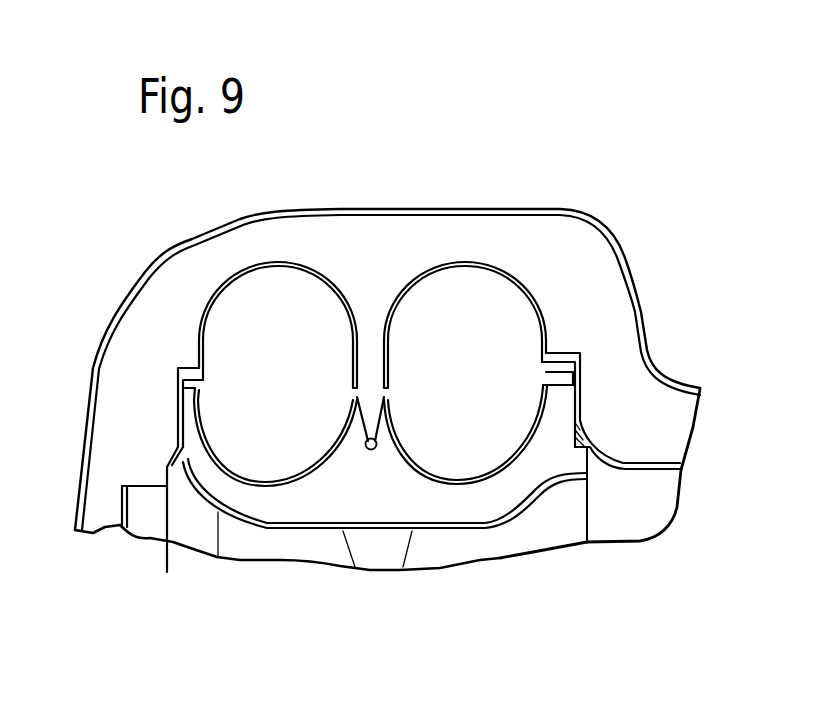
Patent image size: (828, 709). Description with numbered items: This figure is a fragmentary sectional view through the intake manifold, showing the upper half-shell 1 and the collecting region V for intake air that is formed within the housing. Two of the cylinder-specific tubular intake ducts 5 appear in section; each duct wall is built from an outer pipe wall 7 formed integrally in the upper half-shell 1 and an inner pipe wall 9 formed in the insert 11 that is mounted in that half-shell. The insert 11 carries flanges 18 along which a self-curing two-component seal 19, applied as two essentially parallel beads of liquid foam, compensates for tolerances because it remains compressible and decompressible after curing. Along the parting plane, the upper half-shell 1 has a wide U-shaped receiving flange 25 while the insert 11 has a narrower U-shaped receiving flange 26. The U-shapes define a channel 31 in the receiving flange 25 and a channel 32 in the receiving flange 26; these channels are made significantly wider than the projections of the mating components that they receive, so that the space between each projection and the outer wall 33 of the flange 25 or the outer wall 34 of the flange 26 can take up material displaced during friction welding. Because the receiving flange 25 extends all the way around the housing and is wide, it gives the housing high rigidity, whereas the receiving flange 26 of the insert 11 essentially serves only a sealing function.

The upper half-shell 1 is at (563, 211).
The tubular intake ducts 5 is at (283, 297).
The outer pipe wall 7 is at (315, 285).
The inner pipe wall 9 is at (268, 470).
The insert 11 is at (497, 542).
The flanges 18 is at (179, 515).
The two-component seal 19 is at (585, 423).
The receiving flange 25 is at (578, 273).
The receiving flange 26 is at (525, 483).
The channel 31 is at (595, 323).
The channel 32 is at (268, 510).
The outer wall 33 is at (410, 280).
The outer wall 34 is at (198, 396).
The collecting region V is at (637, 510).